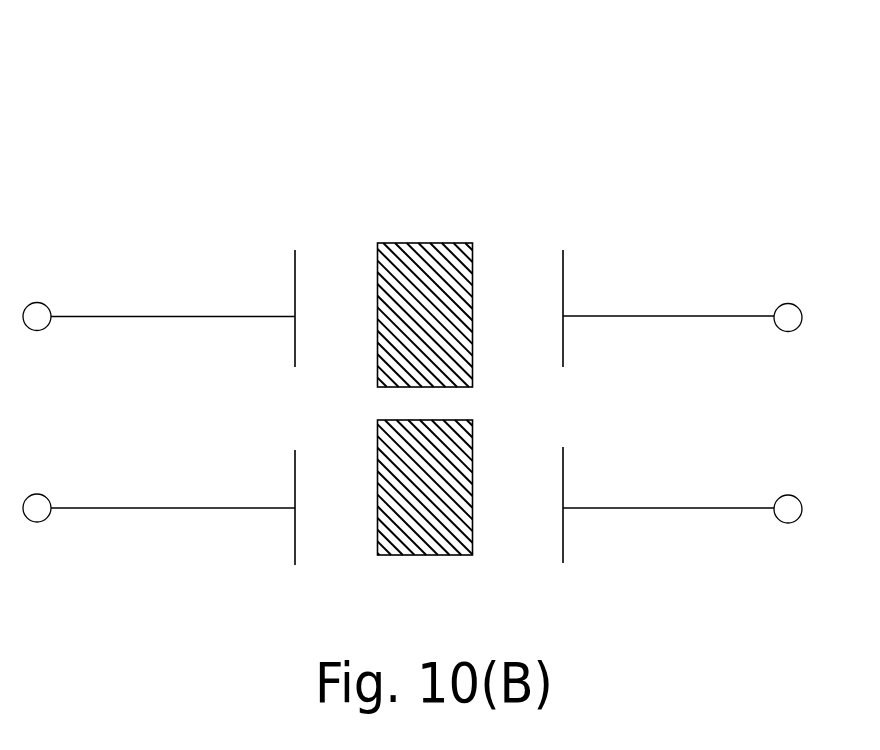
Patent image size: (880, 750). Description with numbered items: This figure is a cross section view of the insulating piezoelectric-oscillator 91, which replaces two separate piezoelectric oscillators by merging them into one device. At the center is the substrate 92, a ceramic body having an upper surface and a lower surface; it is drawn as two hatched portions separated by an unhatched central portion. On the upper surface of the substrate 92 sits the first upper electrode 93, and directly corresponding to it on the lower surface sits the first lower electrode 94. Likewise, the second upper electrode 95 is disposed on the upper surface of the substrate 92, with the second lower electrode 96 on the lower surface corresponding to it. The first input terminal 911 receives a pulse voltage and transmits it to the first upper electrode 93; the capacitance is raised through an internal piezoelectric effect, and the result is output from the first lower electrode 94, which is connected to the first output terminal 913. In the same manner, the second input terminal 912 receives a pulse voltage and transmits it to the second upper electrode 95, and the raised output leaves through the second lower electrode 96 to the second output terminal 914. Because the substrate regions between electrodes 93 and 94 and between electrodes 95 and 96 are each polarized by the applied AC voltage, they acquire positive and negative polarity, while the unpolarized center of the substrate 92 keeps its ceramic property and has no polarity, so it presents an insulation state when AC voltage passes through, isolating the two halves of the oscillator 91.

The insulating piezoelectric-oscillator 91 is at (360, 145).
The substrate 92 is at (439, 243).
The first upper electrode 93 is at (294, 270).
The first lower electrode 94 is at (563, 280).
The second upper electrode 95 is at (295, 470).
The second lower electrode 96 is at (563, 473).
The first input terminal 911 is at (104, 315).
The second input terminal 912 is at (108, 507).
The first output terminal 913 is at (732, 315).
The second output terminal 914 is at (732, 508).